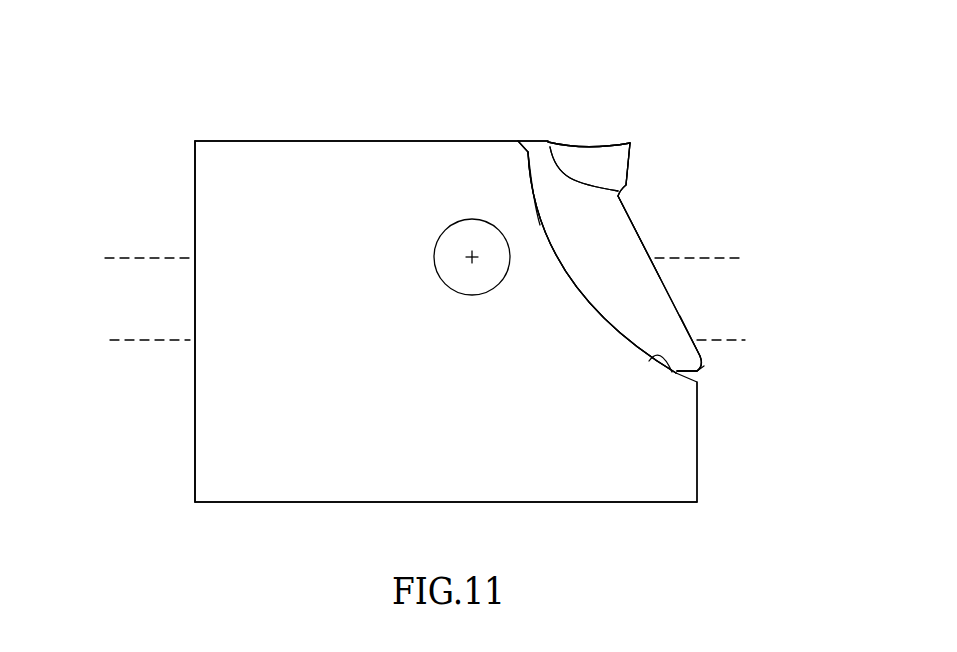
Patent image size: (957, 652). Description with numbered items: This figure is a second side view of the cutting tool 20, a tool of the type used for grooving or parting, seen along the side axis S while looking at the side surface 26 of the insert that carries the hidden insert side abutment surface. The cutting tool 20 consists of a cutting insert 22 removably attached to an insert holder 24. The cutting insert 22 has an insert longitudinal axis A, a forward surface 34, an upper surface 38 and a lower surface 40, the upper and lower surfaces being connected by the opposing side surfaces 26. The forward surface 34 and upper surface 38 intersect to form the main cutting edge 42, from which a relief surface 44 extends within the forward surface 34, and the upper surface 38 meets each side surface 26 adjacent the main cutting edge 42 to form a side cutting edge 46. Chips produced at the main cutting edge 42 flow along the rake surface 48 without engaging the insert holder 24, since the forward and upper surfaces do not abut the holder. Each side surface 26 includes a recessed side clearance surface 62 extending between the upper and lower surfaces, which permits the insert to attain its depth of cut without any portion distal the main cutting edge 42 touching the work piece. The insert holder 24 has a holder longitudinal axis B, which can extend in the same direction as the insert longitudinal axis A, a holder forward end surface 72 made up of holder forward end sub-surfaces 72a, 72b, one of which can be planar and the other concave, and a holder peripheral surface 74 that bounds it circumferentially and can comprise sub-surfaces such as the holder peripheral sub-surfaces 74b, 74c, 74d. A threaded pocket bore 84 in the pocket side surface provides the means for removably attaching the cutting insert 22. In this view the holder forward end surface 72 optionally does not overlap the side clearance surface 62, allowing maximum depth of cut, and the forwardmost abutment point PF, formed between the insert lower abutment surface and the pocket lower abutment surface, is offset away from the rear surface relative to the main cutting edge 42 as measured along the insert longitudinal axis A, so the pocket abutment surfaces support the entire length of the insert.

The cutting tool 20 is at (737, 80).
The cutting insert 22 is at (663, 231).
The insert holder 24 is at (160, 132).
The side surfaces 26 is at (548, 133).
The forward surface 34 is at (703, 352).
The upper surface 38 is at (530, 141).
The lower surface 40 is at (698, 373).
The main cutting edge 42 is at (630, 142).
The relief surface 44 is at (632, 160).
The side cutting edges 46 is at (600, 143).
The rake surface 48 is at (623, 106).
The side clearance surface 62 is at (610, 238).
The holder forward end surface 72 is at (641, 328).
The holder forward end sub-surface 72a is at (611, 324).
The holder forward end sub-surface 72b is at (698, 482).
The holder peripheral surface 74 is at (270, 162).
The holder peripheral sub-surface 74b is at (268, 503).
The holder peripheral sub-surface 74c is at (222, 387).
The holder peripheral sub-surface 74d is at (343, 140).
The threaded pocket bore 84 is at (453, 222).
The side axis S is at (473, 258).
The forwardmost abutment point PF is at (648, 362).
The insert longitudinal axis A is at (424, 258).
The holder longitudinal axis B is at (429, 340).